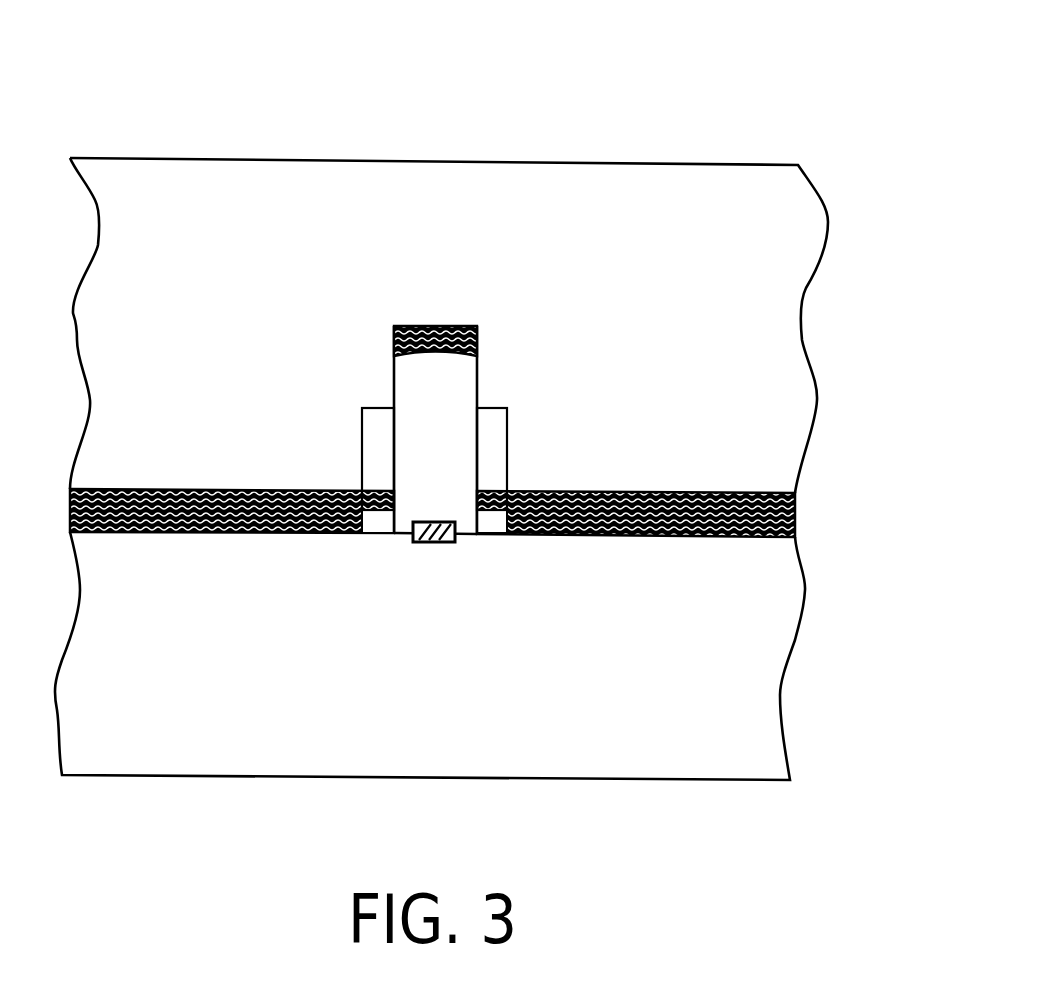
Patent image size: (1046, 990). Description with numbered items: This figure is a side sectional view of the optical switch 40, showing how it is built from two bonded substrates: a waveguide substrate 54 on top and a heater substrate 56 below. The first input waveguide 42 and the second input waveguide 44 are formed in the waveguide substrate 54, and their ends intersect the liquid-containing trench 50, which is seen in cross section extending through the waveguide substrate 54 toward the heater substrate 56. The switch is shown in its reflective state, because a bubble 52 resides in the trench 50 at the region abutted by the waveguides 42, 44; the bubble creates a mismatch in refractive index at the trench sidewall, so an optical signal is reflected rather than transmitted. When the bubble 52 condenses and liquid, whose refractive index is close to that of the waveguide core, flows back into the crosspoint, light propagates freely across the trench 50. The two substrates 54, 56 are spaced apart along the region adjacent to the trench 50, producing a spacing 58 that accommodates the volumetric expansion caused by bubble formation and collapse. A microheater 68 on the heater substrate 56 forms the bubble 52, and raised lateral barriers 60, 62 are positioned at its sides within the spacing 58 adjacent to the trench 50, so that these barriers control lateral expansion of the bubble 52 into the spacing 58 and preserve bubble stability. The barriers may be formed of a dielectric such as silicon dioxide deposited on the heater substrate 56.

The optical switch 40 is at (703, 68).
The first input waveguide 42 is at (373, 457).
The second input waveguide 44 is at (495, 457).
The liquid-containing trench 50 is at (465, 326).
The bubble 52 is at (462, 402).
The waveguide substrate 54 is at (804, 285).
The heater substrate 56 is at (800, 625).
The spacing 58 is at (797, 497).
The lateral barrier 60 is at (378, 525).
The lateral barrier 62 is at (490, 525).
The microheater 68 is at (436, 541).